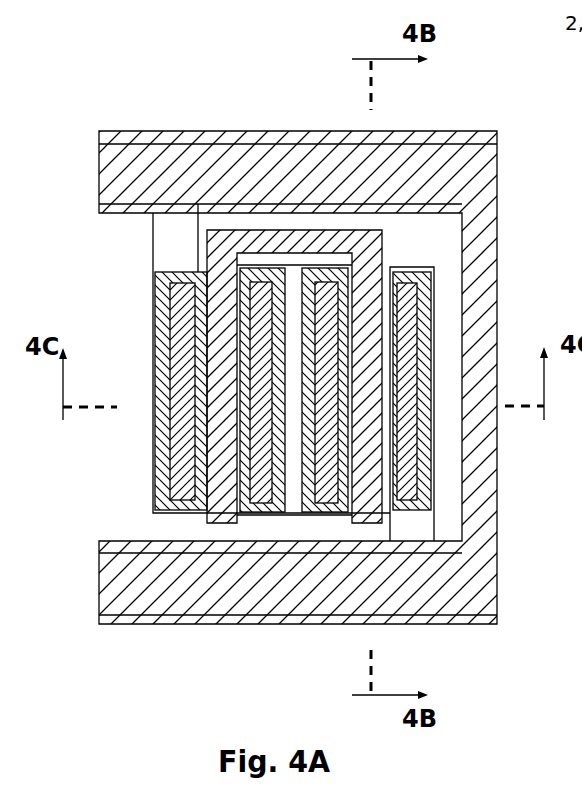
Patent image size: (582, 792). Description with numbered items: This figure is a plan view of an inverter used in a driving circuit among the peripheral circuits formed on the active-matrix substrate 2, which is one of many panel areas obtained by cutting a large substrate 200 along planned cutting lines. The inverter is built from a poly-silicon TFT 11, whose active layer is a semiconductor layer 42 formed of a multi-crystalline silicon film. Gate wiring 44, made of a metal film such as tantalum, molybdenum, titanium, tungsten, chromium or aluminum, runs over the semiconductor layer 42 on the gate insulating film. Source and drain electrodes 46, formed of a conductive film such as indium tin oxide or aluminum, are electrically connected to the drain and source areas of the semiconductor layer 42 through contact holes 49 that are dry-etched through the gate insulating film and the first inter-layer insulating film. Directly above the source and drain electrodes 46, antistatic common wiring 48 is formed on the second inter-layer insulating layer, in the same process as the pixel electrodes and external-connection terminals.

The active-matrix substrate 2 is at (268, 73).
The large substrate 200 is at (300, 330).
The poly-silicon TFT 11 is at (107, 512).
The semiconductor layer 42 is at (415, 458).
The gate wiring 44 is at (237, 240).
The source and drain electrodes 46 is at (160, 450).
The antistatic common wiring 48 is at (120, 213).
The contact holes 49 is at (410, 318).